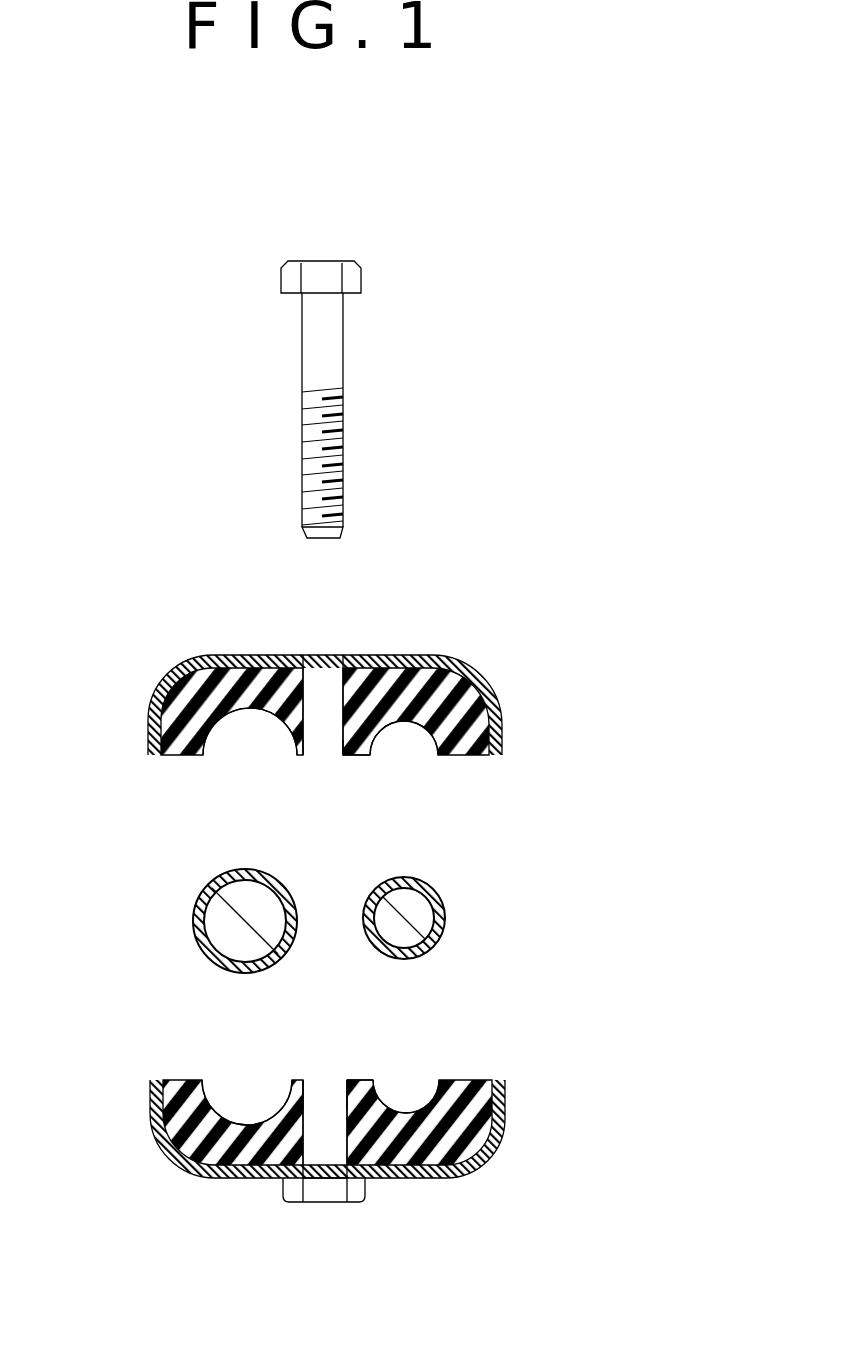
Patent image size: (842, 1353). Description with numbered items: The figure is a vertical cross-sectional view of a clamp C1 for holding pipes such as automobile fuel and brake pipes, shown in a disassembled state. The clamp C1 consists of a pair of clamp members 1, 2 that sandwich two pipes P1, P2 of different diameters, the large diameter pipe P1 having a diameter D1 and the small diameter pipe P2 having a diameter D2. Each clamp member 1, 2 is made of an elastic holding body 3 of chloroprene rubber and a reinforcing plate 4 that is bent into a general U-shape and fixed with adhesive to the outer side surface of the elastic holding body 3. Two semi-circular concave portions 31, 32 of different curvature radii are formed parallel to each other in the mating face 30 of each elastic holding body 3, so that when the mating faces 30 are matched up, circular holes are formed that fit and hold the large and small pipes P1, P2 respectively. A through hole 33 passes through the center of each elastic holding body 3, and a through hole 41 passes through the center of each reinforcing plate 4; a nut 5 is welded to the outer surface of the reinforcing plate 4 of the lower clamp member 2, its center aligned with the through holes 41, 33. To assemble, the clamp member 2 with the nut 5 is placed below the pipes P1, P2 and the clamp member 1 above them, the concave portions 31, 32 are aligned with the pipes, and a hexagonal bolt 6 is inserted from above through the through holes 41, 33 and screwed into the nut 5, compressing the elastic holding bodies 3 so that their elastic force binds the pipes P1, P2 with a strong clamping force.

The clamp member 1 is at (152, 688).
The clamp member 2 is at (187, 1168).
The elastic holding body 3 is at (473, 683).
The reinforcing plate 4 is at (412, 658).
The nut 5 is at (357, 1190).
The hexagonal bolt 6 is at (343, 353).
The mating face 30 is at (360, 755).
The concave portion 31 is at (243, 707).
The concave portion 32 is at (403, 722).
The through hole 33 is at (322, 743).
The through hole 41 is at (323, 660).
The clamp C1 is at (486, 637).
The large diameter pipe P1 is at (205, 953).
The small diameter pipe P2 is at (440, 890).
The diameter of large diameter pipe D1 is at (300, 975).
The diameter of small diameter pipe D2 is at (348, 862).